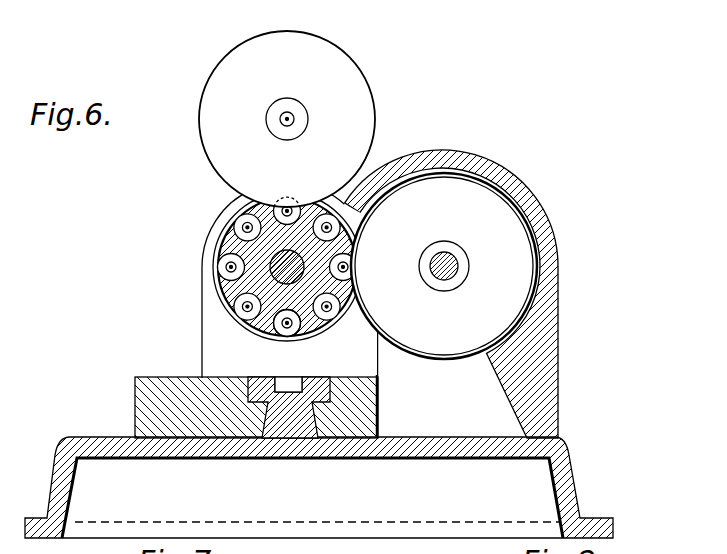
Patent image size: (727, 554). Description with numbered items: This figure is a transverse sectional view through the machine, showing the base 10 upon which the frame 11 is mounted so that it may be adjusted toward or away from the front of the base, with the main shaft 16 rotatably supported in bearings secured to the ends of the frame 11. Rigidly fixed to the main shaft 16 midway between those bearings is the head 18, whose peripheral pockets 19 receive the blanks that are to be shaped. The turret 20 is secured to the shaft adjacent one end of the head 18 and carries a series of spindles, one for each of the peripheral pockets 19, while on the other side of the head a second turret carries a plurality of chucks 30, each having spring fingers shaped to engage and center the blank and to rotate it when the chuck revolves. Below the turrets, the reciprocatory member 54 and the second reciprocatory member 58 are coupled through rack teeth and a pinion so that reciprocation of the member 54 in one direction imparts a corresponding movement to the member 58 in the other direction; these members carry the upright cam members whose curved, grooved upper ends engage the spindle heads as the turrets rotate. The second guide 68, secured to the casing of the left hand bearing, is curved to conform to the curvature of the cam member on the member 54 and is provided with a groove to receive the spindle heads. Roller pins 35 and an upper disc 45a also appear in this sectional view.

The base 10 is at (344, 492).
The frame 11 is at (256, 393).
The main shaft 16 is at (302, 260).
The head 18 is at (312, 281).
The peripheral pockets 19 is at (332, 308).
The turret 20 is at (280, 268).
The chuck 30 is at (226, 243).
The roller pins 35 is at (258, 216).
The upper disc 45a is at (287, 119).
The reciprocatory member 54 is at (284, 377).
The second reciprocatory member 58 is at (302, 366).
The second guide 68 is at (289, 280).